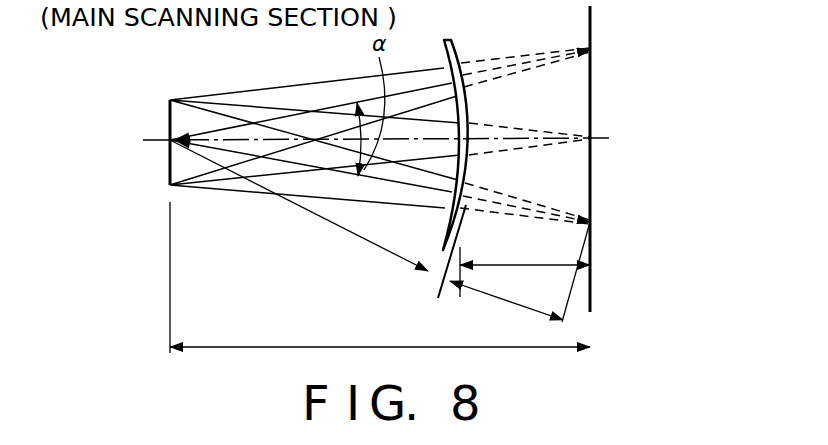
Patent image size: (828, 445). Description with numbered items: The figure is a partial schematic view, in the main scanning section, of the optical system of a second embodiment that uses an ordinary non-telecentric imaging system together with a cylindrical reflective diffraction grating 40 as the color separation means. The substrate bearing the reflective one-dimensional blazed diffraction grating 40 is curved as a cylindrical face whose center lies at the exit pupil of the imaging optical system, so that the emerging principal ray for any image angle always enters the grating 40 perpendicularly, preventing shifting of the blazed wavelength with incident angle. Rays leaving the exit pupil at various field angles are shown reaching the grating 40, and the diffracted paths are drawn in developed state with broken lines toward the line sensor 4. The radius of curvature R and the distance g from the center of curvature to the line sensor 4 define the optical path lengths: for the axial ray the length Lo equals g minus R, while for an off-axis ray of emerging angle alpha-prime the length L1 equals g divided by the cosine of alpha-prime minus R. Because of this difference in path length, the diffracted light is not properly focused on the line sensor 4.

The reflective diffraction grating 40 is at (458, 56).
The line sensor 4 is at (592, 39).
The radius of curvature R is at (299, 205).
The distance from exit pupil to line sensor g is at (380, 277).
The axial optical path length Lo is at (525, 265).
The off-axis optical path length L1 is at (520, 272).